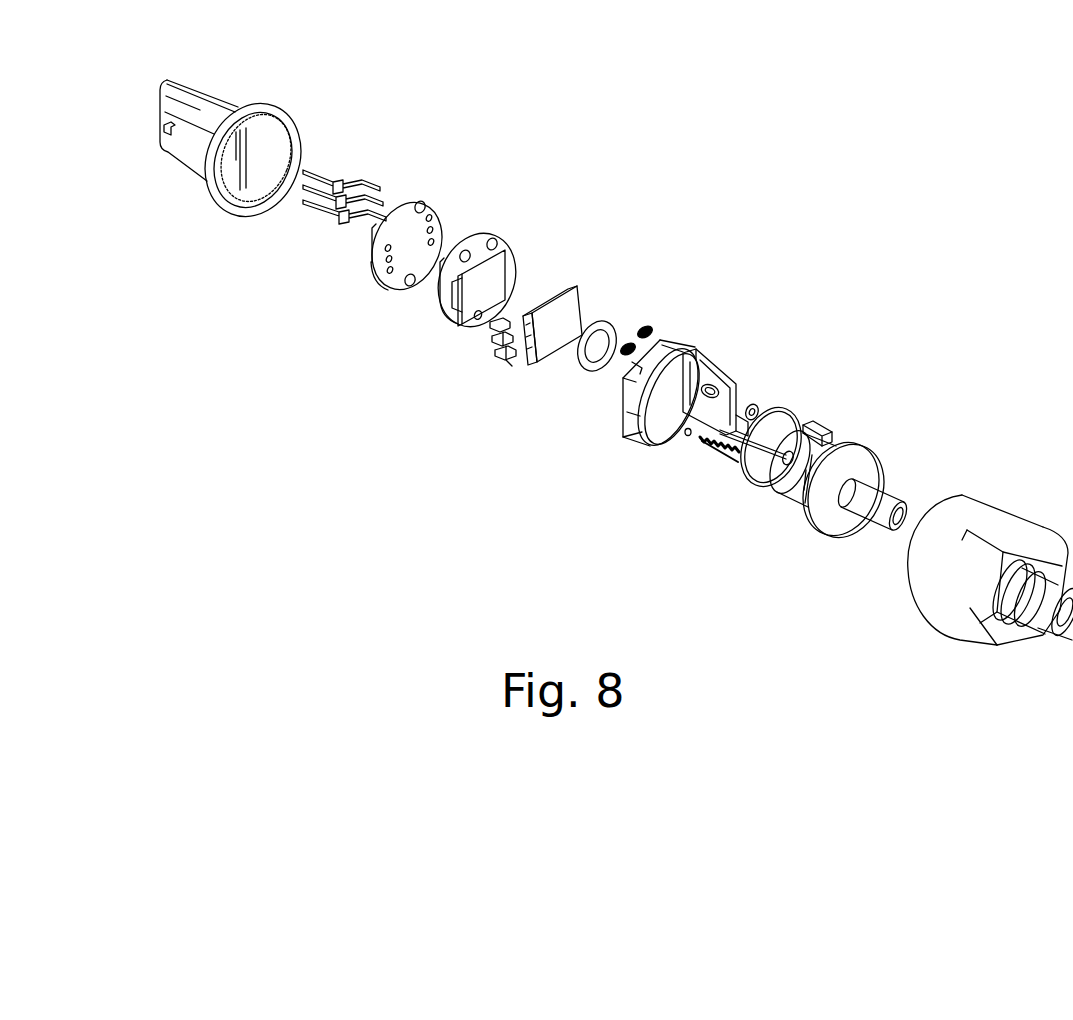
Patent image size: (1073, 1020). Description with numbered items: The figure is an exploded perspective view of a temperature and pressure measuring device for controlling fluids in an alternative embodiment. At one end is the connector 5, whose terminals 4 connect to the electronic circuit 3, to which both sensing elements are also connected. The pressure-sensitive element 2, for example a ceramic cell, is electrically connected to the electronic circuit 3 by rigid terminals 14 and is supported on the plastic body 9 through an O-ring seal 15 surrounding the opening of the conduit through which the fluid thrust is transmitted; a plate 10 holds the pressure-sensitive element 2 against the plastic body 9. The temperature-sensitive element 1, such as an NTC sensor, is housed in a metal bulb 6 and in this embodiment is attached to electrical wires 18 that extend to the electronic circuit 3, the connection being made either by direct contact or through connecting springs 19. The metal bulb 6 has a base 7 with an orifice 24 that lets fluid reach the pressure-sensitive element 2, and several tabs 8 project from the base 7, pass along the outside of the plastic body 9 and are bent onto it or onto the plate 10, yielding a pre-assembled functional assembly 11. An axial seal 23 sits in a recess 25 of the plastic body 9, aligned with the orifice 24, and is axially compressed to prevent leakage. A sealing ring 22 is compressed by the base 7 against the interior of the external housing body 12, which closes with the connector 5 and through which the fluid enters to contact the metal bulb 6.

The temperature-sensitive element 1 is at (788, 460).
The pressure-sensitive element 2 is at (553, 333).
The electronic circuit 3 is at (408, 236).
The terminals 4 is at (338, 220).
The connector 5 is at (190, 143).
The metal bulb 6 is at (884, 511).
The base 7 is at (826, 521).
The tabs 8 is at (820, 435).
The plastic body 9 is at (668, 429).
The plate 10 is at (481, 272).
The functional assembly 11 is at (550, 245).
The housing body 12 is at (968, 576).
The rigid terminals 14 is at (496, 354).
The O-ring seal 15 is at (583, 364).
The electrical wires 18 is at (727, 359).
The connecting springs 19 is at (644, 328).
The sealing ring 22 is at (791, 417).
The axial seal 23 is at (753, 410).
The orifice 24 is at (868, 480).
The recess 25 is at (715, 380).